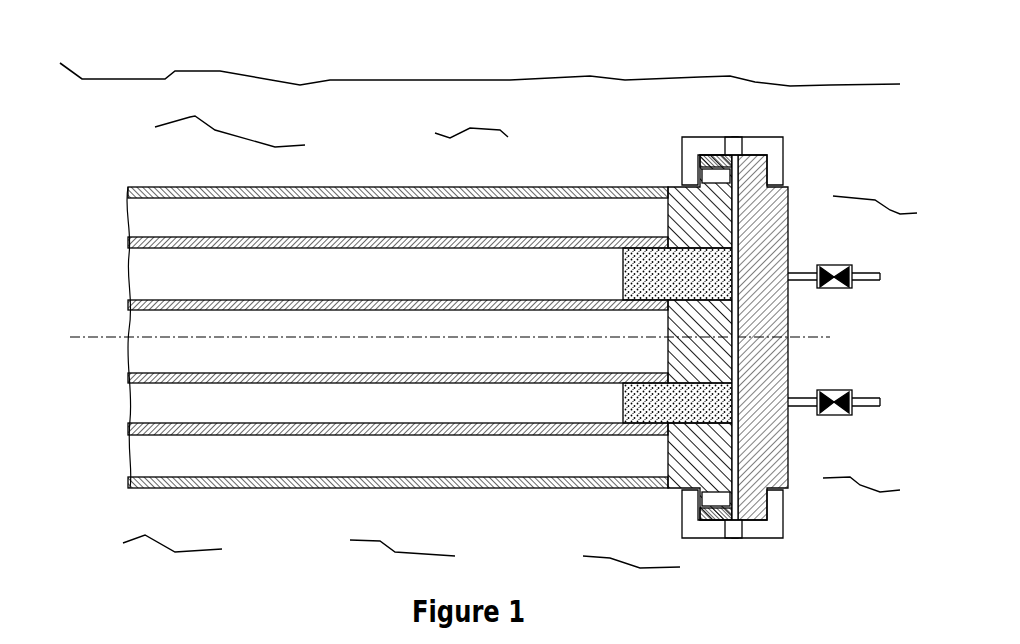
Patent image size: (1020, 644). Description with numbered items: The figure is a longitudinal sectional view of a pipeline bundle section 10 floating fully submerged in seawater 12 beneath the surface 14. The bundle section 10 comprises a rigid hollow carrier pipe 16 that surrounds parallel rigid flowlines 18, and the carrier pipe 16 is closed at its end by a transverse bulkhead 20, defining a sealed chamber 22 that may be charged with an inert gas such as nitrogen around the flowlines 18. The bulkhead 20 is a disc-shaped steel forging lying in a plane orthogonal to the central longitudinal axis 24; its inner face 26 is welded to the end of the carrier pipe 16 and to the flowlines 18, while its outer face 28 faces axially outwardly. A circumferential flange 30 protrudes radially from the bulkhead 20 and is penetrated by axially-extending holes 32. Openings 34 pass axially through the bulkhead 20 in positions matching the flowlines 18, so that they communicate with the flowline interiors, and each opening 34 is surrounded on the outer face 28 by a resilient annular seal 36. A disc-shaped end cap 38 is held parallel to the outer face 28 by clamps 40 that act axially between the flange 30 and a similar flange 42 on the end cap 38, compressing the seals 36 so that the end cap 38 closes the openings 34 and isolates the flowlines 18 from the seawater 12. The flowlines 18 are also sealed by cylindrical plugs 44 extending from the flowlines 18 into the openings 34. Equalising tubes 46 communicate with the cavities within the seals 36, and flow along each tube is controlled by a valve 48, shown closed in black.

The pipeline bundle section 10 is at (88, 183).
The seawater 12 is at (392, 146).
The surface 14 is at (755, 82).
The carrier pipe 16 is at (303, 488).
The flowlines 18 is at (361, 378).
The bulkhead 20 is at (725, 339).
The sealed chamber 22 is at (281, 230).
The central longitudinal axis 24 is at (97, 337).
The inner face 26 is at (668, 228).
The outer face 28 is at (738, 202).
The circumferential flange 30 is at (733, 525).
The axially-extending holes 32 is at (712, 500).
The openings 34 is at (748, 297).
The annular seal 36 is at (733, 237).
The end cap 38 is at (790, 481).
The clamps 40 is at (775, 149).
The end cap flange 42 is at (743, 157).
The plugs 44 is at (633, 277).
The equalising tubes 46 is at (846, 339).
The valve 48 is at (838, 288).